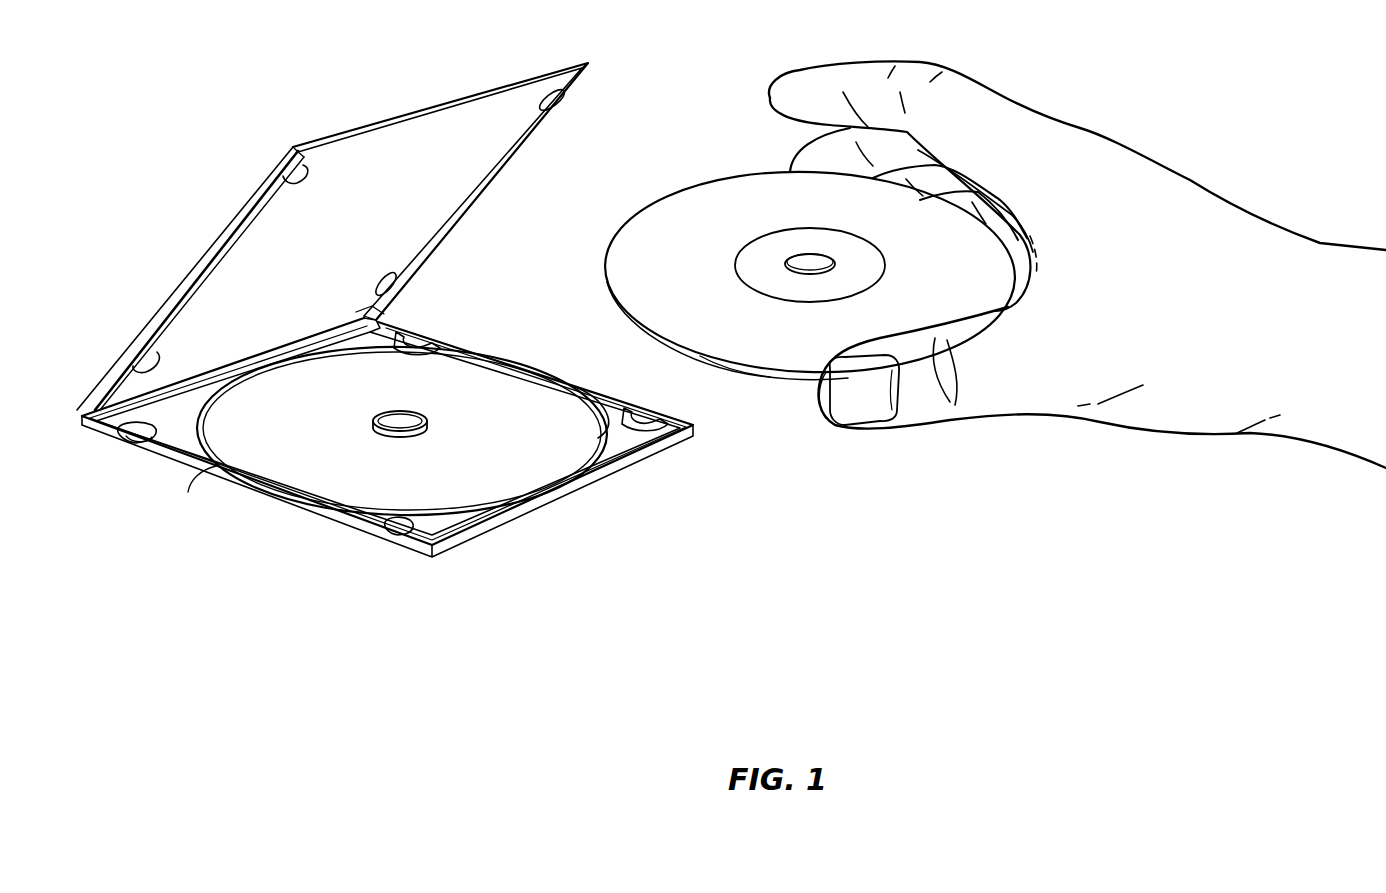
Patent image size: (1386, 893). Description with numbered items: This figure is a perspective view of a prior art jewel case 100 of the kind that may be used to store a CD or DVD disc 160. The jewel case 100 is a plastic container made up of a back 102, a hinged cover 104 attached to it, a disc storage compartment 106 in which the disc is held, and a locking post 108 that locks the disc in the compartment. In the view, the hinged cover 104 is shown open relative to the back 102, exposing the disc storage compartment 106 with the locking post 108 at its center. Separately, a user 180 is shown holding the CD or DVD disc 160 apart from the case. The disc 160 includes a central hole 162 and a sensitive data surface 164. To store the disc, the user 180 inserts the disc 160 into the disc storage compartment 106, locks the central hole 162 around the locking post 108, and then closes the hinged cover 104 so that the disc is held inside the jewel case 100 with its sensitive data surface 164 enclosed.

The jewel case 100 is at (246, 529).
The back 102 is at (599, 482).
The hinged cover 104 is at (410, 108).
The disc storage compartment 106 is at (492, 398).
The locking post 108 is at (376, 418).
The CD or DVD disc 160 is at (612, 252).
The central hole 162 is at (792, 250).
The sensitive data surface 164 is at (735, 374).
The user 180 is at (1372, 432).